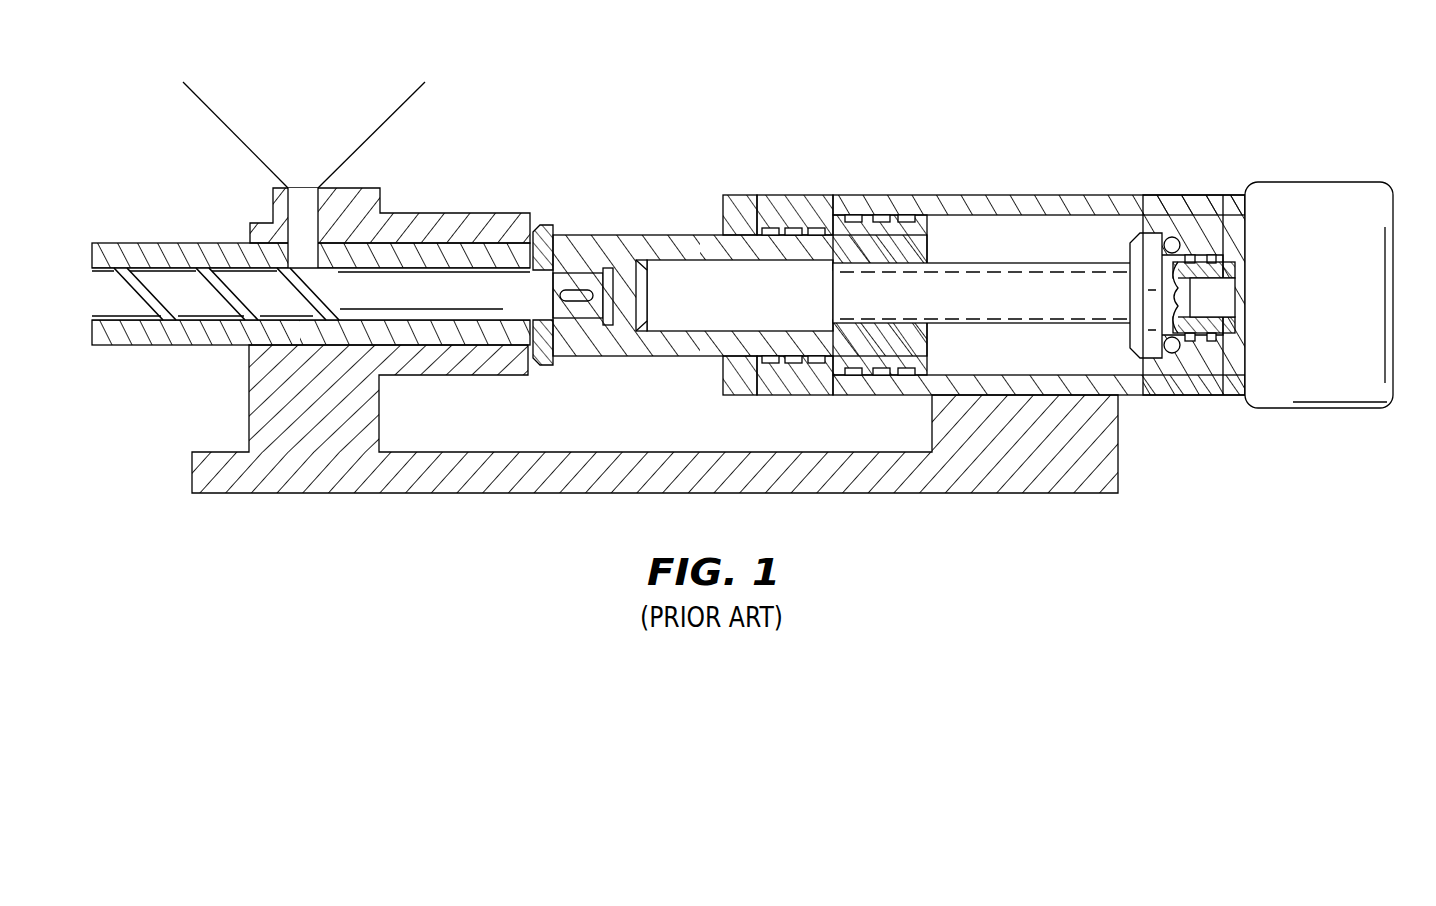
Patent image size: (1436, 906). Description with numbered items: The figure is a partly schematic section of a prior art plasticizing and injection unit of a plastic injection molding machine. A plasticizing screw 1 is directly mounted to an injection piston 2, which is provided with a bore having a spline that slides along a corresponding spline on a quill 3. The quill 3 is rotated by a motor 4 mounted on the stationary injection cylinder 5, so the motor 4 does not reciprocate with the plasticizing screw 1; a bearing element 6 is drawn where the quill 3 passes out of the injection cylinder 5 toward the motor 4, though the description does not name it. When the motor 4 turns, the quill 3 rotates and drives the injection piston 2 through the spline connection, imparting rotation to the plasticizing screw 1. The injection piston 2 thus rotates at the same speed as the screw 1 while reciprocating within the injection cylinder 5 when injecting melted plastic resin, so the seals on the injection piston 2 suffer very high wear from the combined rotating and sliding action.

The plasticizing screw 1 is at (385, 287).
The injection piston 2 is at (866, 233).
The quill 3 is at (1015, 282).
The motor 4 is at (1305, 197).
The injection cylinder 5 is at (952, 200).
The ball bearing 6 is at (1177, 240).